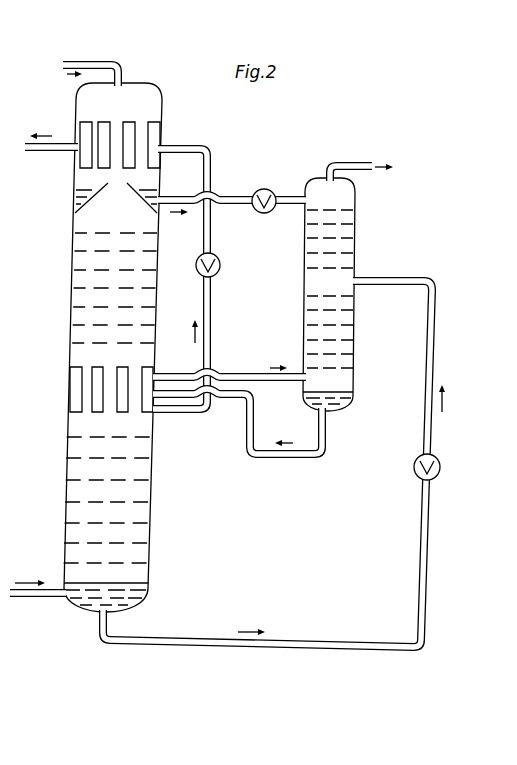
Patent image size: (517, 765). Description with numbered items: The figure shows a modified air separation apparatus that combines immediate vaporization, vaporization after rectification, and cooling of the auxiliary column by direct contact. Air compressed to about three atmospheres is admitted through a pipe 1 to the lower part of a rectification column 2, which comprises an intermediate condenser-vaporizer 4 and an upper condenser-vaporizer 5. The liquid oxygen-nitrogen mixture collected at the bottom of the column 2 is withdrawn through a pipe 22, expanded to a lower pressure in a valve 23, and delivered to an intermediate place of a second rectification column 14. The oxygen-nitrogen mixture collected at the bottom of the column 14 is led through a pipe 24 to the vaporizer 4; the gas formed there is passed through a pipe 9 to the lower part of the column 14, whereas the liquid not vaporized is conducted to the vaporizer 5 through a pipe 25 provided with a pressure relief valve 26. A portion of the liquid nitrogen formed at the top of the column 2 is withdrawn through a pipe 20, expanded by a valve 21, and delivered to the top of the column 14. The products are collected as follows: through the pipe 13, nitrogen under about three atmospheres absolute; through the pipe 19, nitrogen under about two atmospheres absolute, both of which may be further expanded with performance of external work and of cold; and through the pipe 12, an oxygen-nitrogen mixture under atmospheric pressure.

The pipe 1 is at (42, 600).
The rectification column 2 is at (63, 512).
The intermediate condenser-vaporizer 4 is at (75, 390).
The upper condenser-vaporizer 5 is at (82, 157).
The pipe 9 is at (247, 373).
The pipe 12 is at (37, 153).
The pipe 13 is at (108, 58).
The rectification column 14 is at (354, 318).
The pipe 19 is at (352, 158).
The pipe 20 is at (228, 197).
The valve 21 is at (271, 215).
The pipe 22 is at (190, 637).
The valve 23 is at (443, 467).
The pipe 24 is at (302, 462).
The pipe 25 is at (212, 340).
The pressure relief valve 26 is at (222, 270).